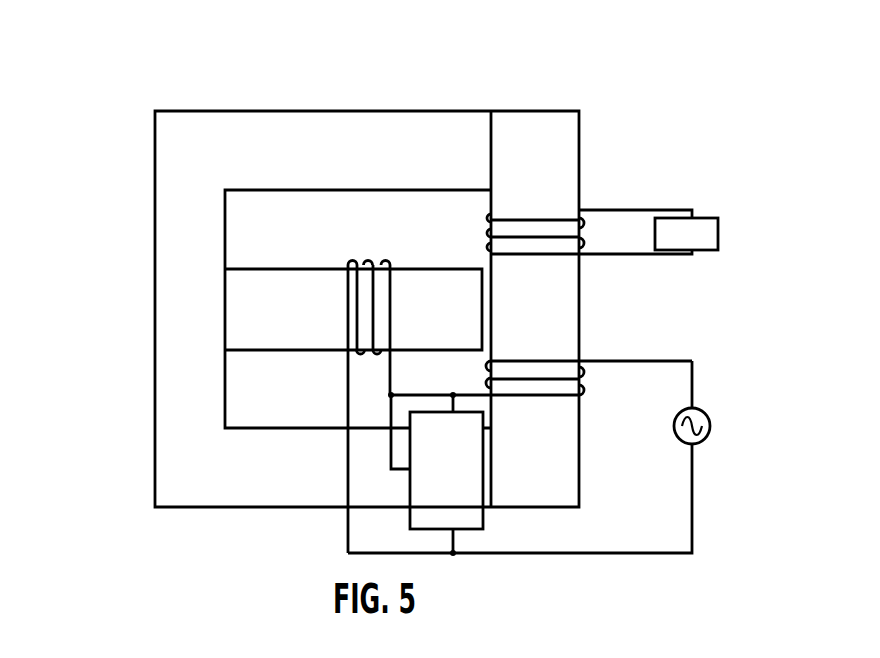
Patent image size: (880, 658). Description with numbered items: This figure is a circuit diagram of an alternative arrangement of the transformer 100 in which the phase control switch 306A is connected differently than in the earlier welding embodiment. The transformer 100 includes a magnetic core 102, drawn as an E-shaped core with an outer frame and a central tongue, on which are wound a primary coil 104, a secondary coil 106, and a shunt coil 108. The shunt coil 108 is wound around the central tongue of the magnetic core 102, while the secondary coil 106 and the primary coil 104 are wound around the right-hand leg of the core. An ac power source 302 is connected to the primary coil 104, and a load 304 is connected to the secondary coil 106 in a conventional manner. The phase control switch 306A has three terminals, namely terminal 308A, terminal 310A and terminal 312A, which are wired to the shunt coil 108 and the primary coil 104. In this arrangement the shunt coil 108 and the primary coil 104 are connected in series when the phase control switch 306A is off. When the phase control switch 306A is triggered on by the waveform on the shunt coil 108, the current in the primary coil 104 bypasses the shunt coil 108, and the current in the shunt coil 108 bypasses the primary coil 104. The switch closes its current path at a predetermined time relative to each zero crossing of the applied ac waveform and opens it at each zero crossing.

The transformer 100 is at (114, 78).
The magnetic core 102 is at (168, 155).
The primary coil 104 is at (502, 362).
The secondary coil 106 is at (508, 218).
The shunt coil 108 is at (380, 247).
The ac power source 302 is at (704, 413).
The load 304 is at (735, 228).
The phase control switch 306A is at (483, 448).
The terminal 308A is at (438, 526).
The terminal 310A is at (427, 445).
The terminal 312A is at (344, 431).